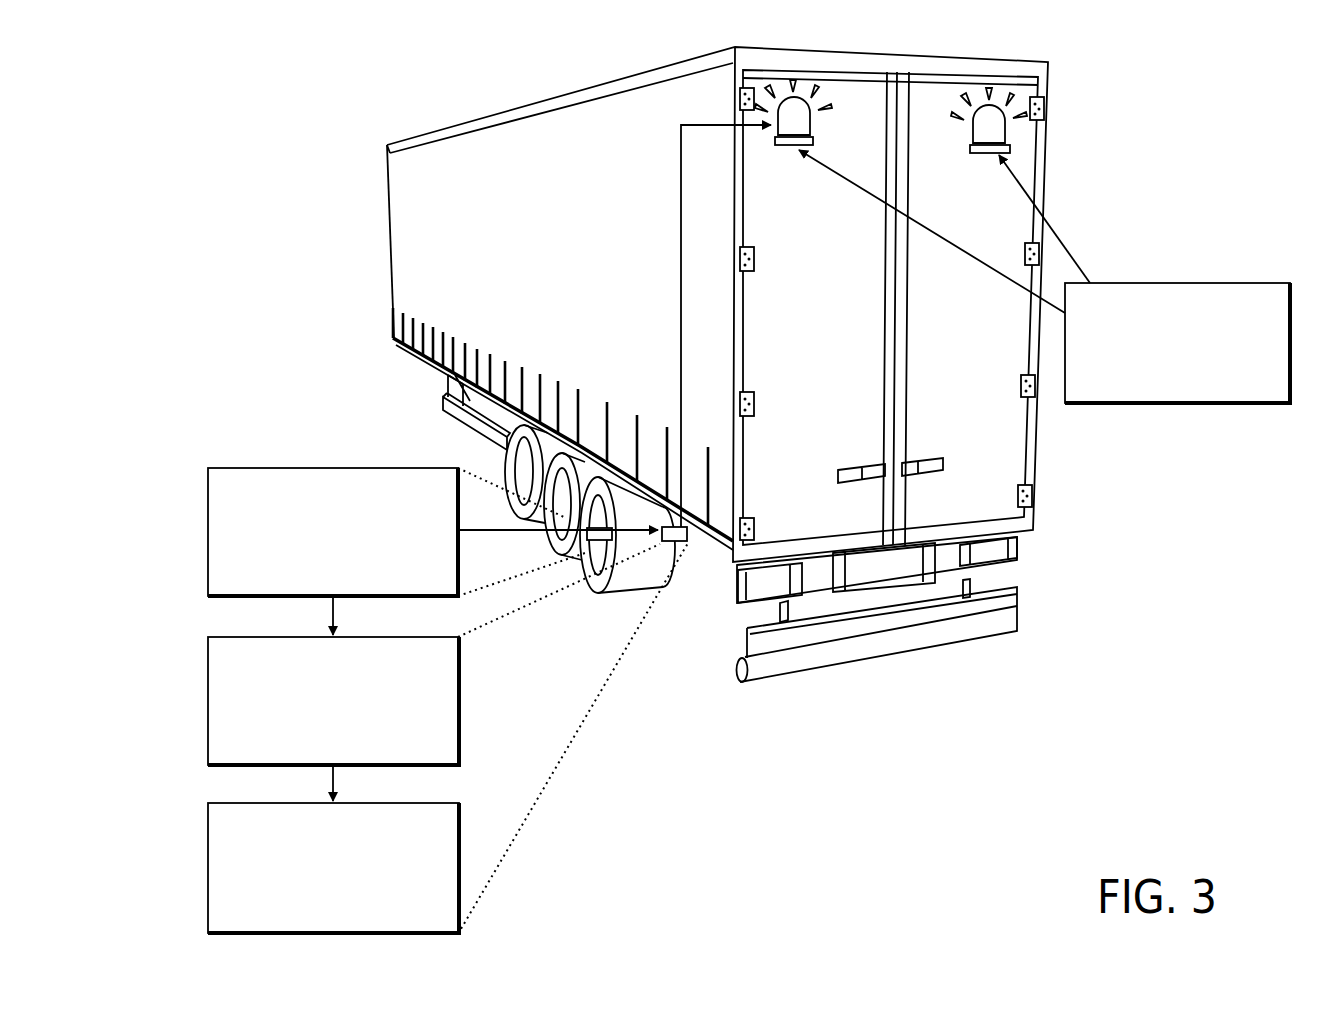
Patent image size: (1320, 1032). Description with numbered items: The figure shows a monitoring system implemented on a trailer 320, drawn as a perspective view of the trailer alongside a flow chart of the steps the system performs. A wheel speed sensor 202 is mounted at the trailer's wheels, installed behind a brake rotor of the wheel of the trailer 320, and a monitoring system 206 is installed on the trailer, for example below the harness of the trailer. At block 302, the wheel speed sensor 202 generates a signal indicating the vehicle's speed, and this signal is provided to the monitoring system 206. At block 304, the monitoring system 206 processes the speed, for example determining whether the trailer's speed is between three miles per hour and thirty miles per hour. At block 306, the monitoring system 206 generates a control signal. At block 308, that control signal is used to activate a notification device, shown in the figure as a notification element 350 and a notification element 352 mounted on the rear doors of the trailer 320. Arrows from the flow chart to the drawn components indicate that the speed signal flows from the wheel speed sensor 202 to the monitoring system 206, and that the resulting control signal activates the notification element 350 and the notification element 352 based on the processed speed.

The wheel speed sensor 202 is at (598, 528).
The monitoring system 206 is at (683, 528).
The block 302 is at (310, 467).
The block 304 is at (208, 692).
The block 306 is at (208, 855).
The block 308 is at (1170, 403).
The trailer 320 is at (1042, 66).
The notification element 350 is at (793, 113).
The notification element 352 is at (989, 120).